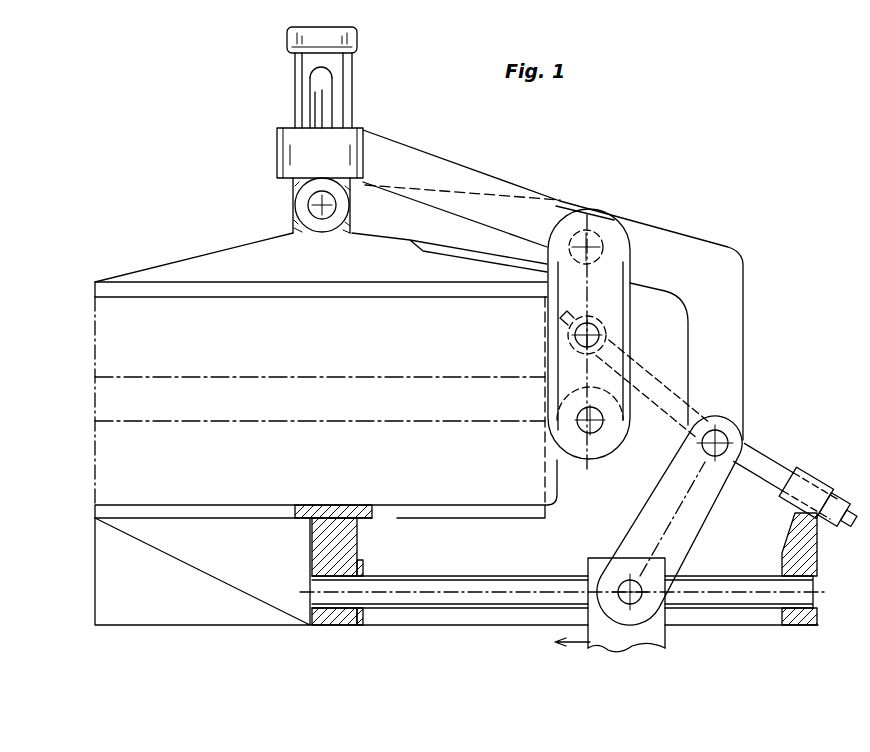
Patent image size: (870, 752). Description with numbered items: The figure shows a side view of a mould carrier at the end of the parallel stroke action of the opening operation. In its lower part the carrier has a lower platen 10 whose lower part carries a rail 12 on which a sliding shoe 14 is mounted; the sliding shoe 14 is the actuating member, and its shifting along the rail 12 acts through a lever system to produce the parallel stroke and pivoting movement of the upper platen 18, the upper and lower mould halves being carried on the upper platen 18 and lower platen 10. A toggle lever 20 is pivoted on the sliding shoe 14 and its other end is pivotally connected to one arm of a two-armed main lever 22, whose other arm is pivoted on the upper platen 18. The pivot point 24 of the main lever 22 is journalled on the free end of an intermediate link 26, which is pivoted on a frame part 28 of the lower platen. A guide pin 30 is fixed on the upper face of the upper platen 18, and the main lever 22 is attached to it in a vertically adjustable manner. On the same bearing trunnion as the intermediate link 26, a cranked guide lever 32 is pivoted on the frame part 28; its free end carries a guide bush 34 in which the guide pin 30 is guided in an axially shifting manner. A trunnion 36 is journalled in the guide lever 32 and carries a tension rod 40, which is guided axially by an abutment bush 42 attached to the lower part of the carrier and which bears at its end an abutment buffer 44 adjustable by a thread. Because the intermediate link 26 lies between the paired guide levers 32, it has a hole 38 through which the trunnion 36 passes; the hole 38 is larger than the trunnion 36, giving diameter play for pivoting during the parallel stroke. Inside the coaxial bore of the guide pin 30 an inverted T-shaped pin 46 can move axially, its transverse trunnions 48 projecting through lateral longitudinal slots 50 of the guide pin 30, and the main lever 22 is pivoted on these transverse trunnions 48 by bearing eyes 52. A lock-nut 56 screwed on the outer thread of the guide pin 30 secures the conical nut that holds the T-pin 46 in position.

The lower platen 10 is at (237, 513).
The rail 12 is at (463, 592).
The sliding shoe 14 is at (627, 630).
The upper platen 18 is at (197, 290).
The toggle lever 20 is at (688, 523).
The main lever 22 is at (700, 258).
The pivot point 24 is at (597, 233).
The intermediate link 26 is at (563, 232).
The frame part 28 is at (640, 426).
The guide pin 30 is at (355, 115).
The guide lever 32 is at (447, 178).
The guide bush 34 is at (348, 152).
The trunnion 36 is at (603, 334).
The hole 38 is at (600, 318).
The tension rod 40 is at (762, 458).
The abutment bush 42 is at (813, 473).
The abutment buffer 44 is at (828, 522).
The inverted T-shaped pin 46 is at (305, 112).
The transverse trunnions 48 is at (320, 205).
The lateral longitudinal slots 50 is at (318, 88).
The bearing eyes 52 is at (308, 198).
The lock-nut 56 is at (287, 44).